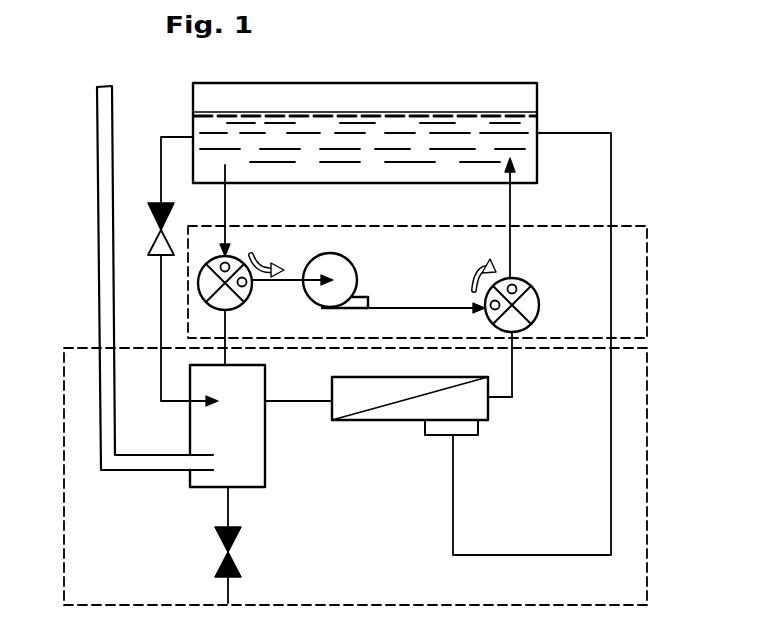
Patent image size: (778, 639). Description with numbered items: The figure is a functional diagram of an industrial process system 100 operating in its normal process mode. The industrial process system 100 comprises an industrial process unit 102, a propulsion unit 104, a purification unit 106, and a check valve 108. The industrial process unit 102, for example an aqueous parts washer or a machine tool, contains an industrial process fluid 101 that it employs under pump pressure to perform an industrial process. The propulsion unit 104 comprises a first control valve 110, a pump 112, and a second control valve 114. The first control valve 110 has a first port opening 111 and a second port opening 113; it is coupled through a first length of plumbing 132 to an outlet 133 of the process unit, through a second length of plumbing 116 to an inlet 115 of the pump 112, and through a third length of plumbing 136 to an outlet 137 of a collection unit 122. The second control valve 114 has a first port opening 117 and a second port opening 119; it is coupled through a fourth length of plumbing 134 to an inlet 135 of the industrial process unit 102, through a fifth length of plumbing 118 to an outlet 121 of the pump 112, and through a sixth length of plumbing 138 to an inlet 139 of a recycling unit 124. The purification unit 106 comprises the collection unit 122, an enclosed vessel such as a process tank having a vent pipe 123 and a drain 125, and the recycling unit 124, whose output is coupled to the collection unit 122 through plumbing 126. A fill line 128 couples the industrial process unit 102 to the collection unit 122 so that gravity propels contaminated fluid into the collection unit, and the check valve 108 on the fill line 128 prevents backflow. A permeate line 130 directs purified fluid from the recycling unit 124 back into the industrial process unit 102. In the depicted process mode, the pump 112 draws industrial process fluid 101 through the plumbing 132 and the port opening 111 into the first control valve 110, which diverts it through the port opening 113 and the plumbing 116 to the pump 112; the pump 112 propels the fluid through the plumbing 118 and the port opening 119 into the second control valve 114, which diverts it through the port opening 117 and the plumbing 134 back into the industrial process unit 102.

The industrial process system 100 is at (606, 60).
The industrial process fluid 101 is at (488, 154).
The industrial process unit 102 is at (430, 82).
The propulsion unit 104 is at (650, 277).
The purification unit 106 is at (650, 438).
The check valve 108 is at (149, 234).
The first control valve 110 is at (198, 283).
The first port opening 111 is at (222, 262).
The pump 112 is at (333, 254).
The second port opening 113 is at (247, 300).
The second control valve 114 is at (539, 302).
The inlet 115 is at (296, 283).
The plumbing 116 is at (296, 281).
The first port opening 117 is at (514, 285).
The plumbing 118 is at (384, 309).
The second port opening 119 is at (494, 307).
The outlet 121 is at (366, 295).
The collection unit 122 is at (268, 487).
The vent pipe 123 is at (97, 243).
The recycling unit 124 is at (383, 421).
The drain 125 is at (243, 562).
The plumbing 126 is at (287, 402).
The fill line 128 is at (183, 137).
The permeate line 130 is at (500, 556).
The plumbing 132 is at (228, 214).
The outlet 133 is at (228, 188).
The plumbing 134 is at (513, 205).
The inlet 135 is at (511, 184).
The plumbing 136 is at (221, 312).
The outlet 137 is at (228, 358).
The plumbing 138 is at (505, 398).
The inlet 139 is at (500, 385).